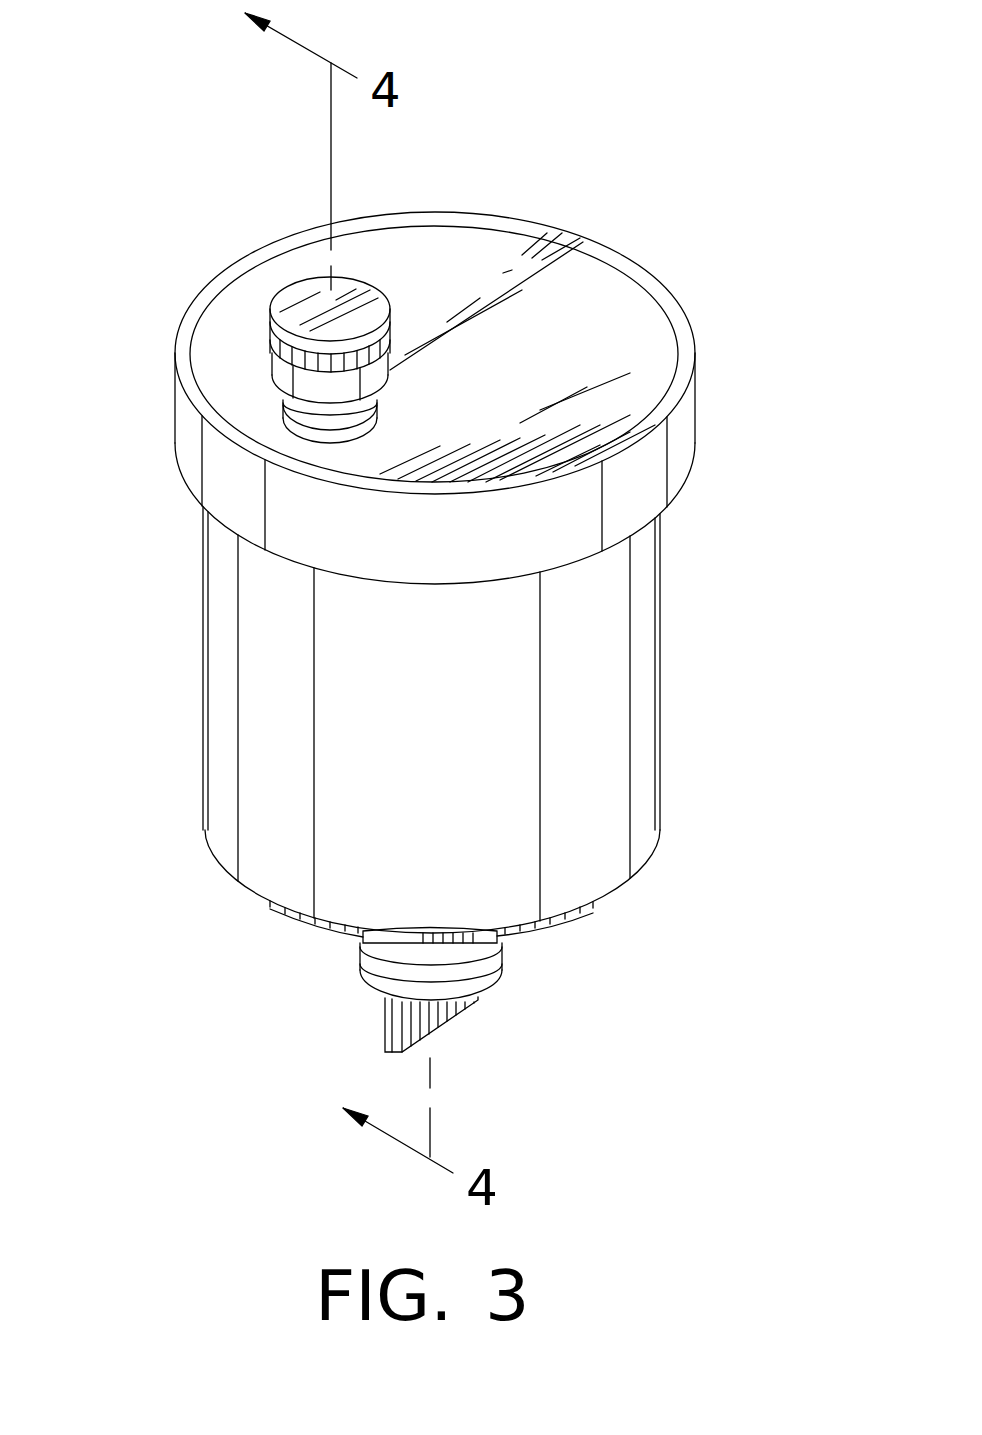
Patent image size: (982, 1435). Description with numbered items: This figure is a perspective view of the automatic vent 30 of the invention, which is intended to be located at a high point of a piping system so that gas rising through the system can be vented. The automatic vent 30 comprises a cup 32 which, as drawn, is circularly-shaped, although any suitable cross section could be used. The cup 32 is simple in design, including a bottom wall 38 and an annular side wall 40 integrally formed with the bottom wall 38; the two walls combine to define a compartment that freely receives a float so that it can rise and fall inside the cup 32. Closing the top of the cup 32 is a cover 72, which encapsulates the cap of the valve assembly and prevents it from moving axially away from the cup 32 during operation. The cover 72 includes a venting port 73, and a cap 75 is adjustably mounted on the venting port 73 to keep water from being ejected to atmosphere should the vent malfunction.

The automatic vent 30 is at (474, 554).
The cup 32 is at (488, 779).
The bottom wall 38 is at (230, 873).
The annular side wall 40 is at (640, 743).
The cover 72 is at (580, 327).
The venting port 73 is at (285, 422).
The cap 75 is at (267, 366).